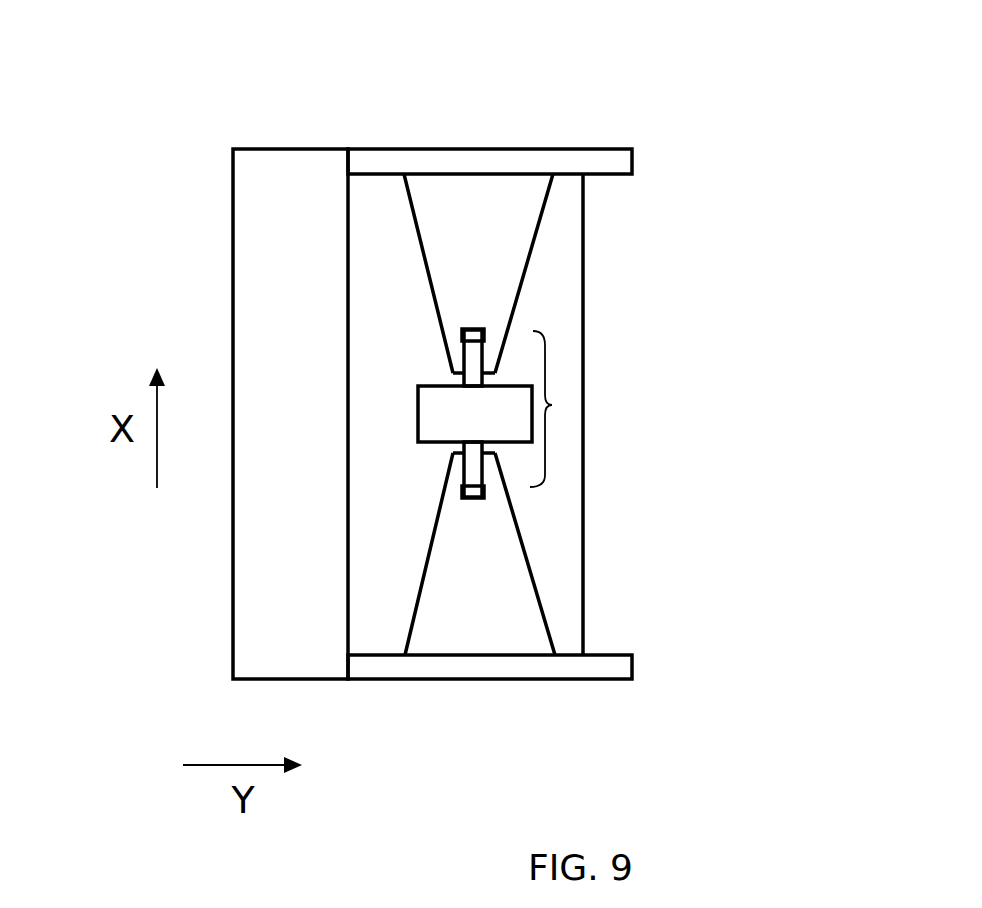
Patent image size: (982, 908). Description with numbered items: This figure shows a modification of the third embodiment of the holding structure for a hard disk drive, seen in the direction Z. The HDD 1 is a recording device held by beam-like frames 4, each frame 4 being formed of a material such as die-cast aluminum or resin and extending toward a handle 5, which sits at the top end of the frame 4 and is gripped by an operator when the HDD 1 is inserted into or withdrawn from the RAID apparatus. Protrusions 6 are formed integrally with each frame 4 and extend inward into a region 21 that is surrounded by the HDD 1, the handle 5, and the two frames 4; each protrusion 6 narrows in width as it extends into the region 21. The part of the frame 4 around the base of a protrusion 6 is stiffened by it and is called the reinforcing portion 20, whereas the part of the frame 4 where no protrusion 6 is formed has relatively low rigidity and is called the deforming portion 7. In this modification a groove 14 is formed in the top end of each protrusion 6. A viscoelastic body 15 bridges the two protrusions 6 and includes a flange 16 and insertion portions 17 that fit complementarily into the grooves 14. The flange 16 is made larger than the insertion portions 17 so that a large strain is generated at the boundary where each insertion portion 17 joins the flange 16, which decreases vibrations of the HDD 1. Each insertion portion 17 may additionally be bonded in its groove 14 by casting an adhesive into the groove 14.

The HDD 1 is at (625, 305).
The frame 4 is at (346, 80).
The handle 5 is at (290, 367).
The protrusion 6 is at (460, 213).
The deforming portion 7 is at (351, 143).
The groove 14 is at (473, 332).
The viscoelastic body 15 is at (572, 435).
The flange 16 is at (448, 414).
The insertion portion 17 is at (470, 364).
The reinforcing portion 20 is at (417, 143).
The region 21 is at (553, 270).